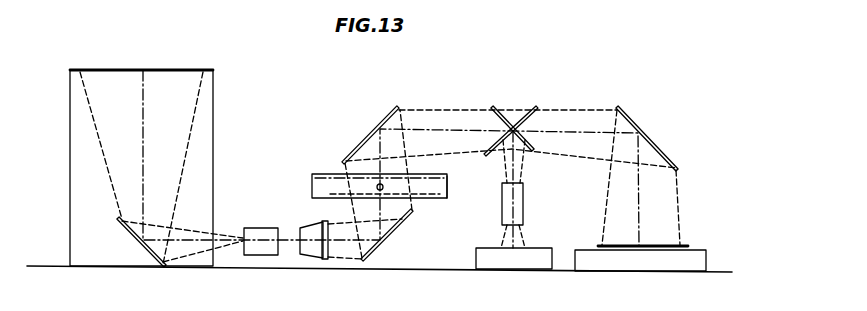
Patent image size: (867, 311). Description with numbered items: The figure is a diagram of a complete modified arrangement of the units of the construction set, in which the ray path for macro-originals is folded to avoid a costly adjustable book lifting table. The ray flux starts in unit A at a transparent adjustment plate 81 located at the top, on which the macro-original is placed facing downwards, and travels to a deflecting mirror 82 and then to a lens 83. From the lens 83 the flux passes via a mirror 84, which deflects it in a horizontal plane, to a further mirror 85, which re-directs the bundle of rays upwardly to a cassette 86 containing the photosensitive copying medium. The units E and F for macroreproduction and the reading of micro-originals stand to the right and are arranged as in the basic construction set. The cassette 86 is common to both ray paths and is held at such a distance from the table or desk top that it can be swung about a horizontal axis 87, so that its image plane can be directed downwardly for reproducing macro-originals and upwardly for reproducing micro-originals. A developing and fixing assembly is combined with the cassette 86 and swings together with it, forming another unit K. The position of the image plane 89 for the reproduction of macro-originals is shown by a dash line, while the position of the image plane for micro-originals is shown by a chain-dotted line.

The unit A is at (64, 150).
The transparent adjustment plate 81 is at (185, 69).
The deflecting mirror 82 is at (128, 229).
The lens 83 is at (256, 232).
The mirror 84 is at (307, 228).
The mirror 85 is at (382, 245).
The cassette 86 is at (317, 185).
The horizontal axis 87 is at (378, 185).
The image plane 89 is at (436, 176).
The unit K is at (327, 170).
The unit E is at (526, 205).
The unit F is at (684, 208).